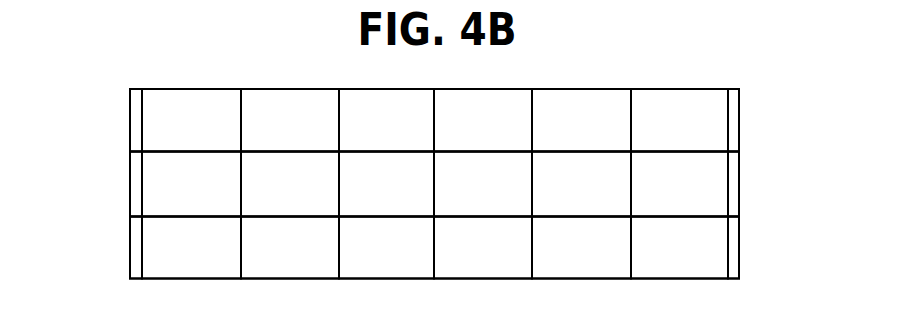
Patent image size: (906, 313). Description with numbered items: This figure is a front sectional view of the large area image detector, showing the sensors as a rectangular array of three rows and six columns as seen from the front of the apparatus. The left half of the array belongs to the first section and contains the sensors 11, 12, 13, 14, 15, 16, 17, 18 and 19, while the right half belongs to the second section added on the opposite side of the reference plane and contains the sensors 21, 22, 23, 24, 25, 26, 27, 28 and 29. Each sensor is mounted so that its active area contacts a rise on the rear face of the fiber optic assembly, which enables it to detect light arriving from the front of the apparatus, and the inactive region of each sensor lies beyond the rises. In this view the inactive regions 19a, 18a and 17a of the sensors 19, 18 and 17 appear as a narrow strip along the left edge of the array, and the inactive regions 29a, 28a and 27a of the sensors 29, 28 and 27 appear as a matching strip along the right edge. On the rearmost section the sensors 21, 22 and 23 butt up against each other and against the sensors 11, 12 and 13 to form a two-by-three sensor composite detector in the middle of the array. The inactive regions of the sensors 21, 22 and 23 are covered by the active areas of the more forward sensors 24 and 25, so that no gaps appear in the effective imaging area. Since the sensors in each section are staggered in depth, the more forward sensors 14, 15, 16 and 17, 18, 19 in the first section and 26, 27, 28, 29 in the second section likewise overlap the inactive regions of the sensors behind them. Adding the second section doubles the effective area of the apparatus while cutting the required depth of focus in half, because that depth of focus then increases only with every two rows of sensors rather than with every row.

The sensor 11 is at (366, 263).
The sensor 12 is at (364, 198).
The sensor 13 is at (368, 132).
The sensor 14 is at (272, 263).
The sensor 15 is at (272, 198).
The sensor 16 is at (272, 132).
The sensor 17 is at (174, 263).
The sensor 18 is at (174, 198).
The sensor 19 is at (174, 132).
The sensor 21 is at (464, 263).
The sensor 22 is at (463, 198).
The sensor 23 is at (465, 132).
The sensor 24 is at (562, 263).
The sensor 25 is at (562, 198).
The sensor 26 is at (563, 132).
The sensor 27 is at (661, 263).
The sensor 28 is at (661, 198).
The sensor 29 is at (661, 132).
The inactive region 17a is at (129, 243).
The inactive region 18a is at (129, 179).
The inactive region 19a is at (129, 108).
The inactive region 27a is at (739, 250).
The inactive region 28a is at (739, 187).
The inactive region 29a is at (739, 118).